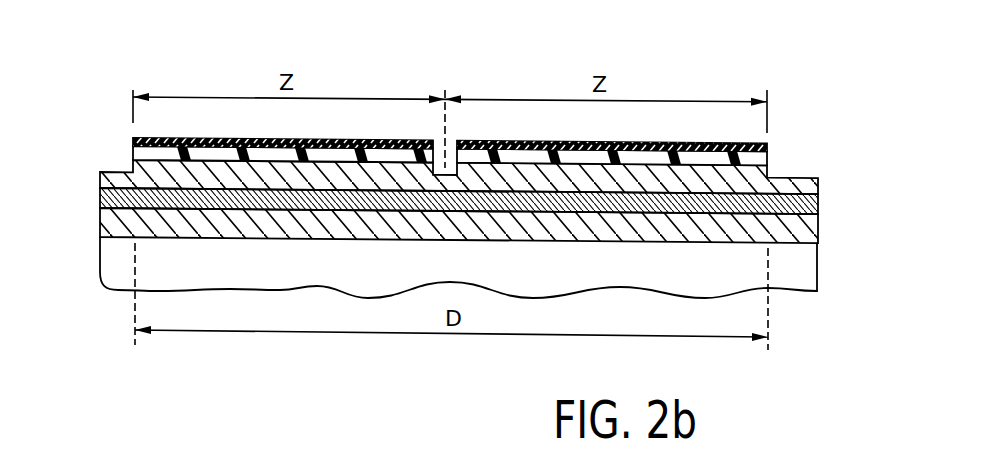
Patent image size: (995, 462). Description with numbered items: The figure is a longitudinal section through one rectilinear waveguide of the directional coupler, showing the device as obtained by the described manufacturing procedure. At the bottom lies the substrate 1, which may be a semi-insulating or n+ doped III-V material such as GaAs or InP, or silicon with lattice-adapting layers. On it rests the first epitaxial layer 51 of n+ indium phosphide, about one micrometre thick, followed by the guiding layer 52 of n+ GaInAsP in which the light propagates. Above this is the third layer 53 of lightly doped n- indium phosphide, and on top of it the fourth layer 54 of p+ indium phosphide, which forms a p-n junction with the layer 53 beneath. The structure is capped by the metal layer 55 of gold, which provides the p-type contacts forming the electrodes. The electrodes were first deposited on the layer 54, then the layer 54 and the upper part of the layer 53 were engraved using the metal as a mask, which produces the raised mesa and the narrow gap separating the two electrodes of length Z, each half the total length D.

The substrate 1 is at (806, 265).
The first epitaxial layer 51 is at (100, 222).
The guiding layer 52 is at (819, 203).
The third layer 53 is at (789, 178).
The fourth layer 54 is at (133, 151).
The metal layer 55 is at (763, 142).